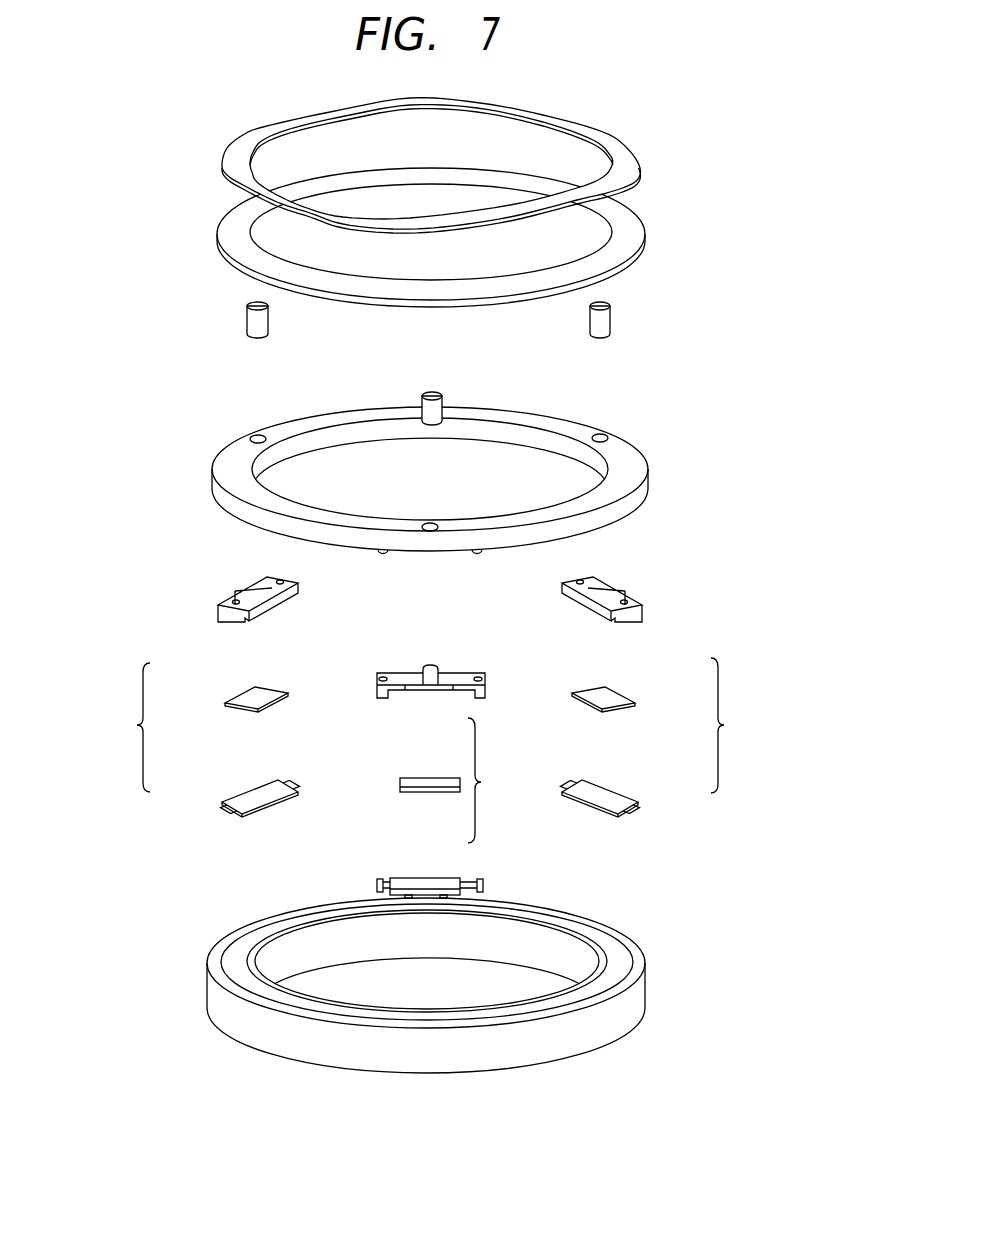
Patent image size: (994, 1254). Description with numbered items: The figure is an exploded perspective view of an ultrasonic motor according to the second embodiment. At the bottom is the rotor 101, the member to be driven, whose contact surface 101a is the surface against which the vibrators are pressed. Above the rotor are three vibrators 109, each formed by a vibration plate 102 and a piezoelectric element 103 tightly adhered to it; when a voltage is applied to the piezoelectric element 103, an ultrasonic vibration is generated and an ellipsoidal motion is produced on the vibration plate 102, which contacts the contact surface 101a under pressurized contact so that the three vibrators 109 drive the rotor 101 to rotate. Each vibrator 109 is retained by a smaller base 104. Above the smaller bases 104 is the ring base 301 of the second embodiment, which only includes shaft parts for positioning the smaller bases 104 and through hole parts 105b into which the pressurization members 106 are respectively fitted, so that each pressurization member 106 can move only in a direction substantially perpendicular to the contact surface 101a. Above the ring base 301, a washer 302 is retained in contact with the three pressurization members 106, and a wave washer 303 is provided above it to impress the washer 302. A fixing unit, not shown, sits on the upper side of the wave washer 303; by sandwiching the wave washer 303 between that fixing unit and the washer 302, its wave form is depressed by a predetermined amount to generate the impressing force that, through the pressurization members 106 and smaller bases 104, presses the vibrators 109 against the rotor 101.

The rotor 101 is at (600, 1035).
The contact surface 101a is at (618, 972).
The vibration plate 102 is at (255, 795).
The piezoelectric element 103 is at (250, 695).
The smaller base 104 is at (238, 600).
The through hole part 105b is at (252, 438).
The pressurization member 106 is at (247, 320).
The vibrator 109 is at (433, 750).
The ring base 301 is at (635, 468).
The washer 302 is at (633, 233).
The wave washer 303 is at (633, 158).